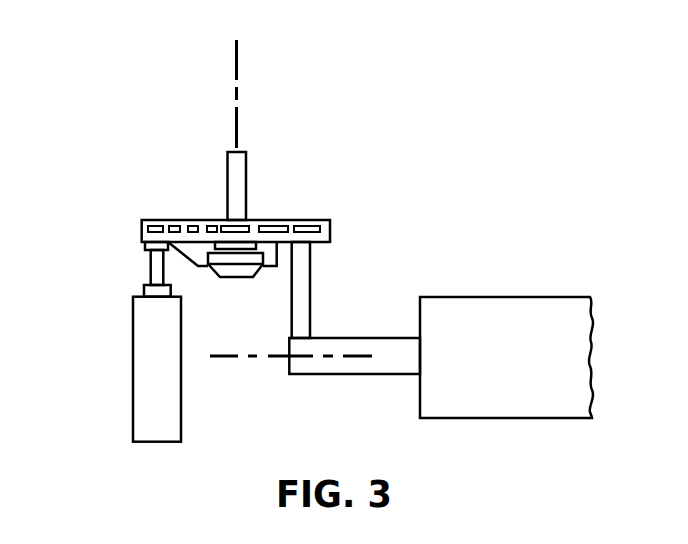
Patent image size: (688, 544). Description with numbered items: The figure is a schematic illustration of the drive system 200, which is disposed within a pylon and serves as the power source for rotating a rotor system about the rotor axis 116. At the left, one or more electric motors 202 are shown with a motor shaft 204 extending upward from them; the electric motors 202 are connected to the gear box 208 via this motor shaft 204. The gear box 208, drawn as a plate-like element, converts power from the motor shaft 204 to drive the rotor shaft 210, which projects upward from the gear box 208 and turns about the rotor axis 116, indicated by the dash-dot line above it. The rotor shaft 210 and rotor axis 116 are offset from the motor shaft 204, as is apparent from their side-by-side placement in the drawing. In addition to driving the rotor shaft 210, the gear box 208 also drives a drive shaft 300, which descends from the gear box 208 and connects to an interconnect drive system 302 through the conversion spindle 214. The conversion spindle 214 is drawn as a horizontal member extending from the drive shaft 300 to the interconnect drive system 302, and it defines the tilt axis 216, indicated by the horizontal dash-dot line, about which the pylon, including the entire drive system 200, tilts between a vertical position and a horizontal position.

The rotor axis 116 is at (235, 57).
The drive system 200 is at (111, 346).
The electric motors 202 is at (132, 403).
The motor shaft 204 is at (150, 268).
The gear box 208 is at (158, 220).
The rotor shaft 210 is at (248, 190).
The conversion spindle 214 is at (360, 337).
The tilt axis 216 is at (230, 358).
The drive shaft 300 is at (292, 313).
The interconnect drive system 302 is at (505, 297).